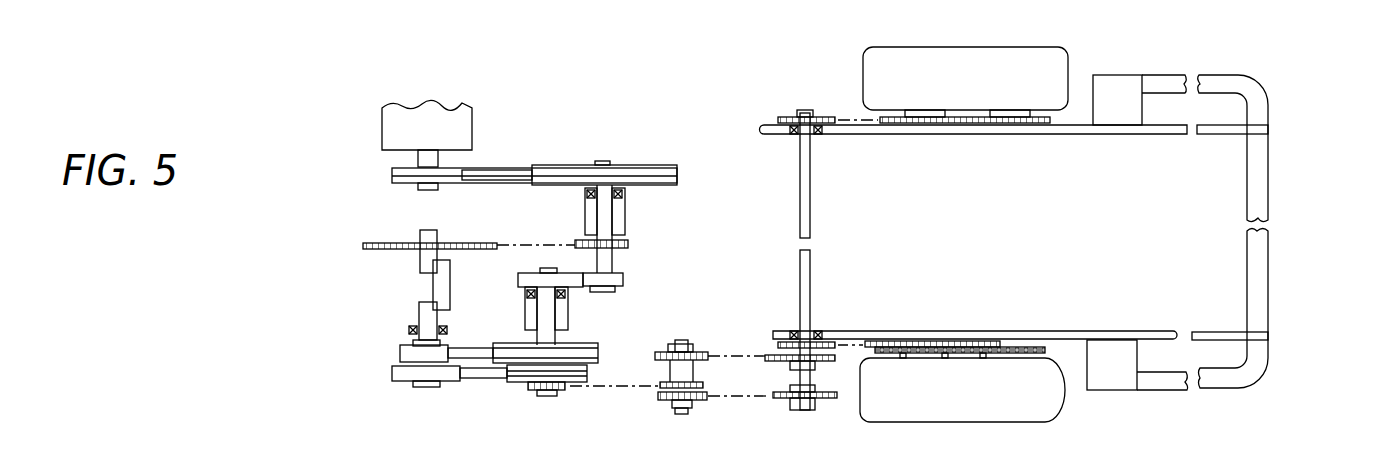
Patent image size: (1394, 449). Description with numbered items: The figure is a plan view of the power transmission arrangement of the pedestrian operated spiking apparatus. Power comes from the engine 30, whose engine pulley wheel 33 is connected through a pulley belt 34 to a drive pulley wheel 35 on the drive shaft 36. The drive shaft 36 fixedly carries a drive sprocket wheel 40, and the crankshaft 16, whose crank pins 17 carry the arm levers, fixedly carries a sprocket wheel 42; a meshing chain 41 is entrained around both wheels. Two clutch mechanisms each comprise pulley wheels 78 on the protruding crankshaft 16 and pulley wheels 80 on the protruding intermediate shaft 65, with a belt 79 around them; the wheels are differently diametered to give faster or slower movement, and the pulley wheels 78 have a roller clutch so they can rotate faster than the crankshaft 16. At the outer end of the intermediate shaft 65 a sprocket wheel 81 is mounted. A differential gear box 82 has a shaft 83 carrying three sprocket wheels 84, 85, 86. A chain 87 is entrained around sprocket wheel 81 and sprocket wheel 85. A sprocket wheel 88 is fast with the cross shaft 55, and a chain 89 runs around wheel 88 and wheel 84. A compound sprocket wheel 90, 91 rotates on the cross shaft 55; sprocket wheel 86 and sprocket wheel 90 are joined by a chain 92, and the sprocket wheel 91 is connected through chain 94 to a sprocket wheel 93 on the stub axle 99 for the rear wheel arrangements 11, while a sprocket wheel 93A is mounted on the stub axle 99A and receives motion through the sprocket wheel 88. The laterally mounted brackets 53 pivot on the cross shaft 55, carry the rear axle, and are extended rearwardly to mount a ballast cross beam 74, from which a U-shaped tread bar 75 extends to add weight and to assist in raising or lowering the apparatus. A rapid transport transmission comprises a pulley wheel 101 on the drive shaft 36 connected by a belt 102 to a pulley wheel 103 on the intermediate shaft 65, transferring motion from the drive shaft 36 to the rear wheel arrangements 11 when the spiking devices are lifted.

The wheel arrangements 11 is at (863, 82).
The crankshaft 16 is at (412, 317).
The crank pin 17 is at (433, 294).
The engine 30 is at (440, 112).
The engine pulley wheel 33 is at (468, 168).
The pulley belt 34 is at (516, 170).
The drive pulley wheel 35 is at (640, 166).
The drive shaft 36 is at (598, 218).
The drive sprocket wheel 40 is at (626, 242).
The meshing chain 41 is at (514, 243).
The sprocket wheel 42 is at (406, 243).
The brackets 53 is at (1044, 134).
The cross shaft 55 is at (811, 222).
The intermediate shaft 65 is at (552, 312).
The ballast cross beam 74 is at (1120, 118).
The 'U' tread bar 75 is at (1262, 172).
The pulley wheels 78 is at (393, 371).
The belt 79 is at (466, 356).
The pulley wheels 80 is at (588, 368).
The sprocket wheel 81 is at (533, 388).
The differential gear box 82 is at (698, 334).
The shaft 83 is at (660, 378).
The sprocket wheel 84 is at (706, 400).
The sprocket wheel 85 is at (660, 398).
The sprocket wheel 86 is at (700, 354).
The chain 87 is at (580, 388).
The sprocket wheel 88 is at (836, 400).
The chain 89 is at (742, 400).
The compound sprocket wheel 90 is at (838, 362).
The compound sprocket wheel 91 is at (822, 340).
The chain 92 is at (748, 354).
The sprocket wheel 93 is at (1000, 340).
The sprocket wheel 93A is at (998, 124).
The chain 94 is at (868, 340).
The stub axle 99 is at (975, 356).
The stub axle 99A is at (948, 100).
The pulley wheel 101 is at (622, 281).
The belt 102 is at (608, 273).
The pulley wheel 103 is at (517, 277).